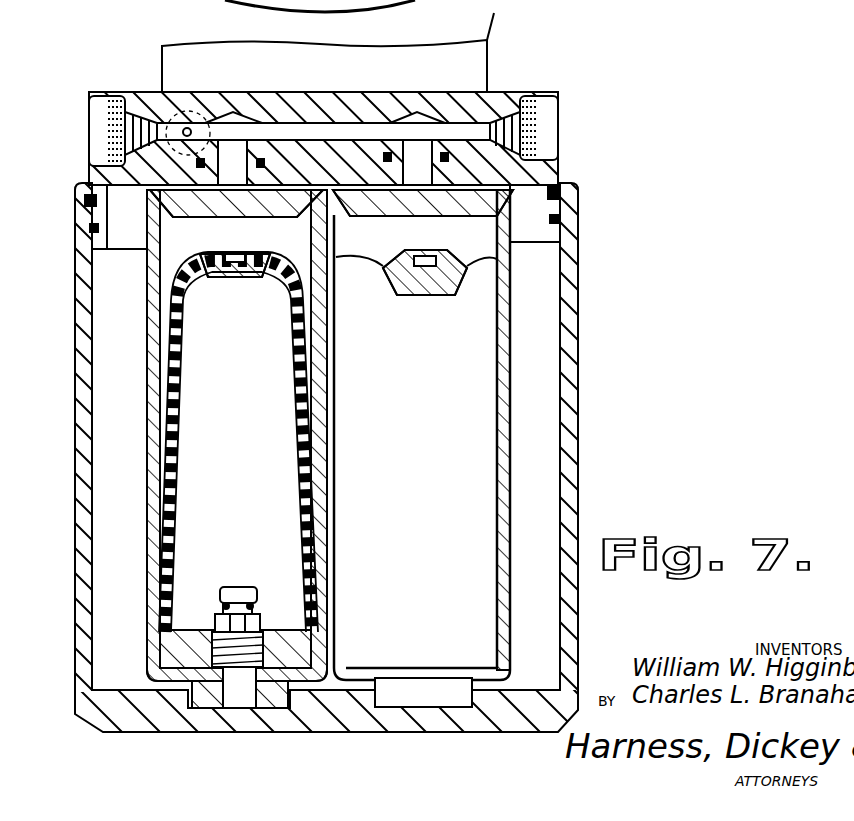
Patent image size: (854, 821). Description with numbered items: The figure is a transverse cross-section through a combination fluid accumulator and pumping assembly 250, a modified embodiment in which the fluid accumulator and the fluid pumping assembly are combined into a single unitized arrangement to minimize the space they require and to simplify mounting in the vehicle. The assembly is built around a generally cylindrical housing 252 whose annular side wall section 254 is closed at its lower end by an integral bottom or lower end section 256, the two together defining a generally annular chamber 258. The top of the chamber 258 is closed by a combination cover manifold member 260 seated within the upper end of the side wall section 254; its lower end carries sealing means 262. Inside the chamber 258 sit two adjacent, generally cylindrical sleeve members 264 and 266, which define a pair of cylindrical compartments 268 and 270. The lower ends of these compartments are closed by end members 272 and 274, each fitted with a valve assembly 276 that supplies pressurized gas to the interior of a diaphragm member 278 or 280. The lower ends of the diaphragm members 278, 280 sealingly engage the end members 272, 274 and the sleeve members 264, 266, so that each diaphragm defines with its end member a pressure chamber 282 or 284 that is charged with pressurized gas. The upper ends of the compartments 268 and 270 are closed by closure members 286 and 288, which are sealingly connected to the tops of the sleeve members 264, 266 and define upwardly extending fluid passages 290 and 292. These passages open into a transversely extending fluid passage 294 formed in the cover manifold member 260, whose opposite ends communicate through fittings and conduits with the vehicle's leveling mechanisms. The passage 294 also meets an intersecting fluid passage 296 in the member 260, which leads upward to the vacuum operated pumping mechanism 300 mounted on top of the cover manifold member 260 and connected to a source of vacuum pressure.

The combination fluid accumulator and pumping assembly 250 is at (614, 243).
The housing 252 is at (582, 412).
The annular side wall section 254 is at (565, 481).
The bottom or lower end section 256 is at (372, 700).
The annular chamber or compartment 258 is at (562, 321).
The combination cover manifold member 260 is at (512, 88).
The sealing means 262 is at (560, 216).
The sleeve member 264 is at (150, 373).
The sleeve member 266 is at (500, 259).
The cylindrical compartment 268 is at (185, 256).
The cylindrical compartment 270 is at (419, 259).
The end member 272 is at (298, 680).
The end member 274 is at (458, 703).
The valve assembly 276 is at (242, 585).
The diaphragm member 278 is at (288, 366).
The diaphragm member 280 is at (463, 263).
The pressure chamber 282 is at (212, 463).
The pressure chamber 284 is at (440, 295).
The closure member 286 is at (119, 268).
The closure member 288 is at (423, 179).
The fluid passage 290 is at (236, 180).
The fluid passage 292 is at (430, 140).
The transversely extending fluid passage 294 is at (300, 118).
The intersecting fluid passage 296 is at (390, 125).
The vacuum operated pumping mechanism 300 is at (512, 6).